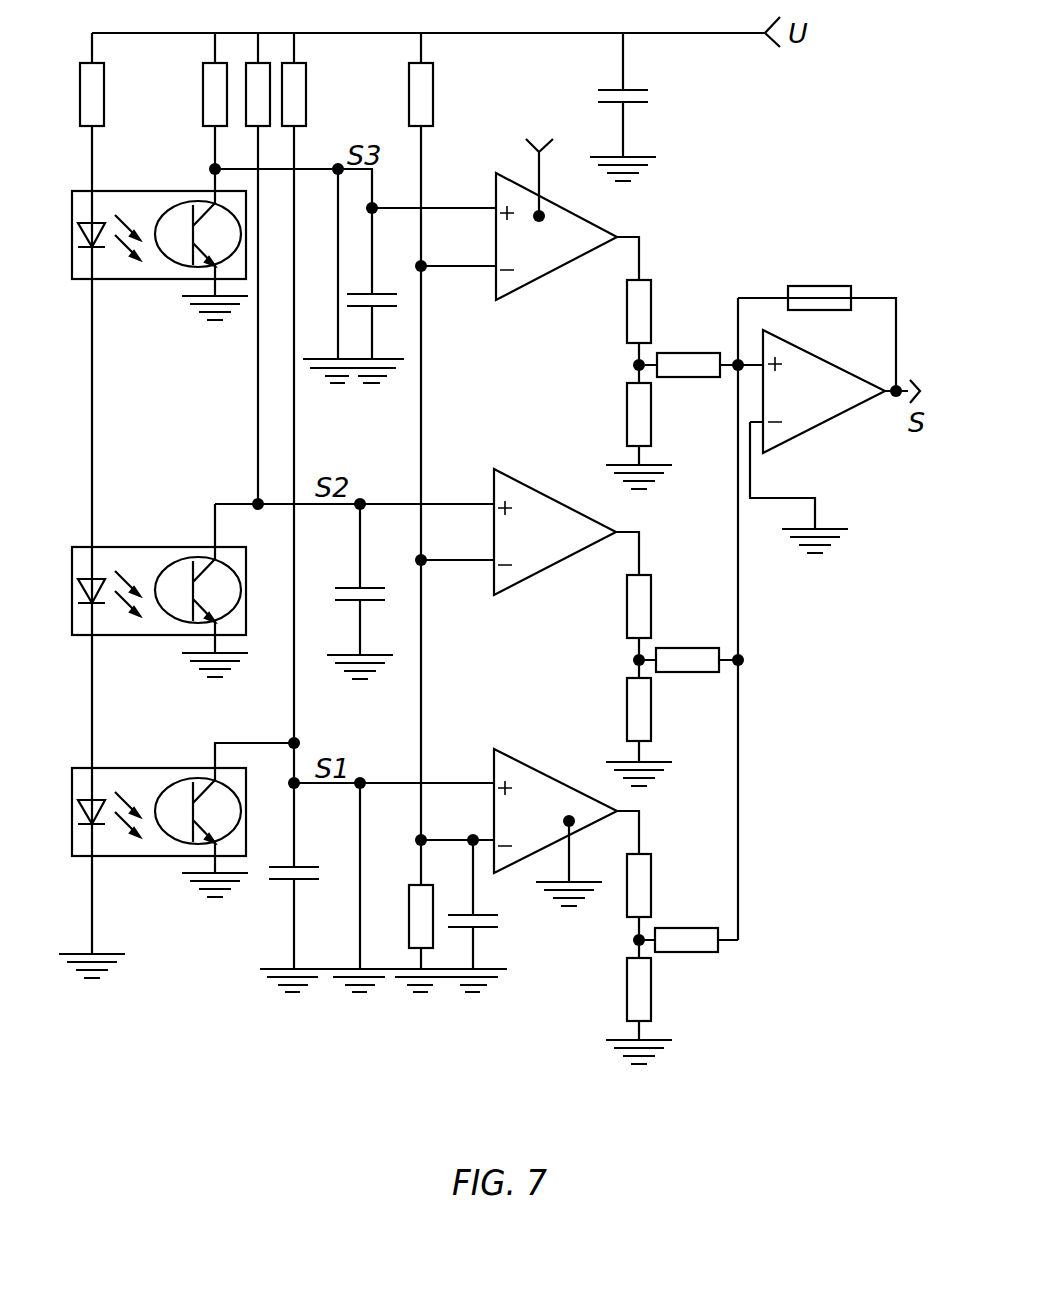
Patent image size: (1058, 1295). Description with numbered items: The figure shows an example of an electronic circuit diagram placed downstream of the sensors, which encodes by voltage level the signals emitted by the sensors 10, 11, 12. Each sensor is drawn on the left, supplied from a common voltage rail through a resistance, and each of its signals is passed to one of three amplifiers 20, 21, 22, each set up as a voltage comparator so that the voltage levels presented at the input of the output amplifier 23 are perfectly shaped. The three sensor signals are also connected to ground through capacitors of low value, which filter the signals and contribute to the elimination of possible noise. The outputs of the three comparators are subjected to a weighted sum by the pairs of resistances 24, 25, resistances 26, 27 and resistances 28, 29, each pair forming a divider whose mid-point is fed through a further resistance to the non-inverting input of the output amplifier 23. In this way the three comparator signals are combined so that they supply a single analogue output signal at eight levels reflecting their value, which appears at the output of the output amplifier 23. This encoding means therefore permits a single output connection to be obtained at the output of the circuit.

The sensor 10 is at (122, 280).
The sensor 11 is at (122, 636).
The sensor 12 is at (122, 857).
The amplifier 20 is at (500, 298).
The amplifier 21 is at (500, 594).
The amplifier 22 is at (500, 871).
The output amplifier 23 is at (827, 427).
The resistance 24 is at (643, 308).
The resistance 25 is at (643, 425).
The resistance 26 is at (643, 607).
The resistance 27 is at (643, 717).
The resistance 28 is at (643, 890).
The resistance 29 is at (643, 1000).